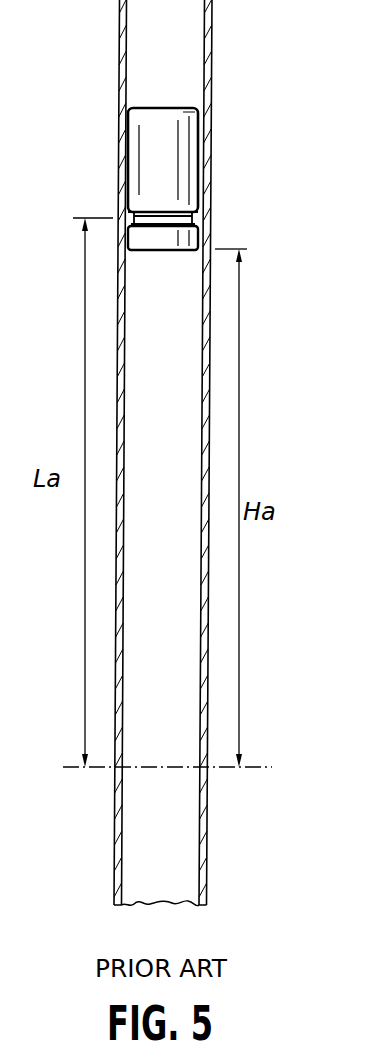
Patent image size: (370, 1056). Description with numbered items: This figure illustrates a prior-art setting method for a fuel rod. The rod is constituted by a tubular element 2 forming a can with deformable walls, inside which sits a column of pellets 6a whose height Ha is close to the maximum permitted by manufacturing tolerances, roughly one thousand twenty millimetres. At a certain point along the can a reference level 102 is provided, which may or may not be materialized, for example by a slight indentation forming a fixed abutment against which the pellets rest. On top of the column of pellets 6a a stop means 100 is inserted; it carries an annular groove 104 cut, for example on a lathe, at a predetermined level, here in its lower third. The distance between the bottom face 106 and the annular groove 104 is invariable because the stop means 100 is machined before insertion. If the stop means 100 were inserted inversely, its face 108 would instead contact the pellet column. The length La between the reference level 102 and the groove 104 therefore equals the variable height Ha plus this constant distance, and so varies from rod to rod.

The tubular element 2 is at (118, 833).
The column of pellets 6a is at (148, 740).
The stop means 100 is at (150, 148).
The reference level 102 is at (258, 768).
The annular groove 104 is at (200, 218).
The bottom face 106 is at (168, 250).
The face 108 is at (158, 107).